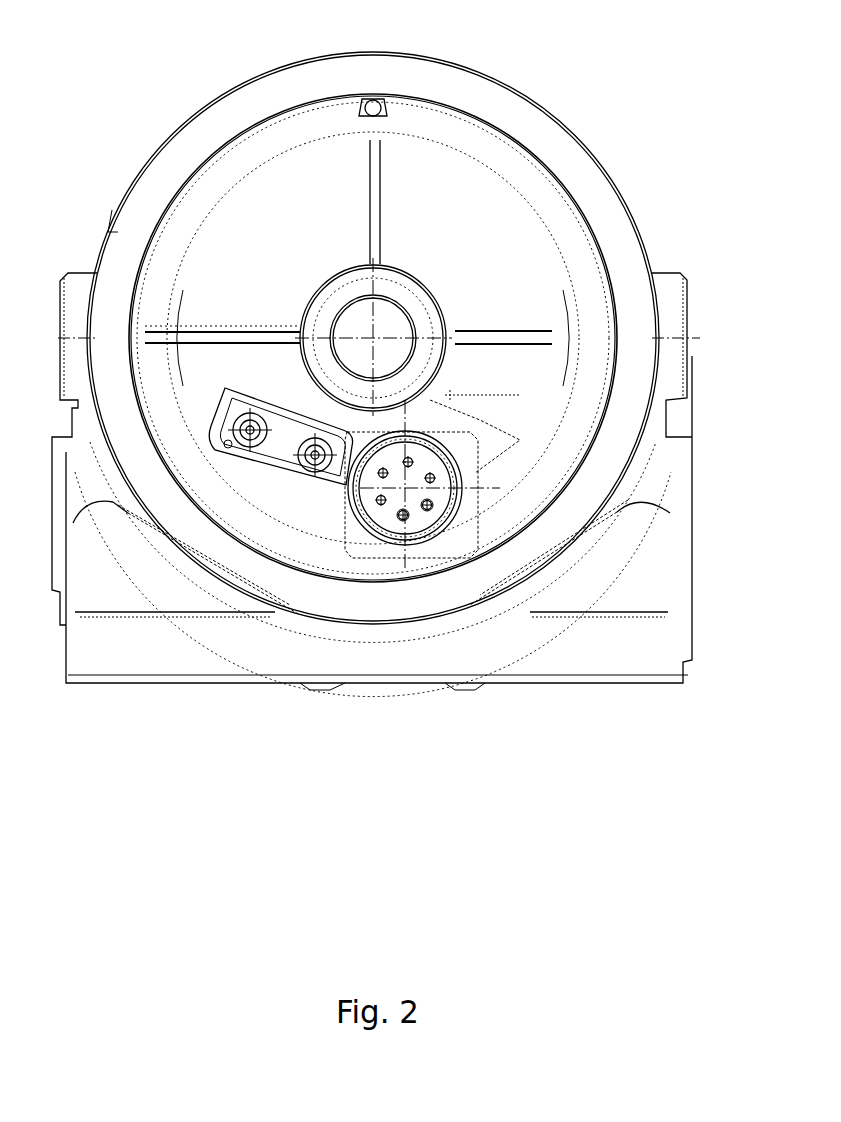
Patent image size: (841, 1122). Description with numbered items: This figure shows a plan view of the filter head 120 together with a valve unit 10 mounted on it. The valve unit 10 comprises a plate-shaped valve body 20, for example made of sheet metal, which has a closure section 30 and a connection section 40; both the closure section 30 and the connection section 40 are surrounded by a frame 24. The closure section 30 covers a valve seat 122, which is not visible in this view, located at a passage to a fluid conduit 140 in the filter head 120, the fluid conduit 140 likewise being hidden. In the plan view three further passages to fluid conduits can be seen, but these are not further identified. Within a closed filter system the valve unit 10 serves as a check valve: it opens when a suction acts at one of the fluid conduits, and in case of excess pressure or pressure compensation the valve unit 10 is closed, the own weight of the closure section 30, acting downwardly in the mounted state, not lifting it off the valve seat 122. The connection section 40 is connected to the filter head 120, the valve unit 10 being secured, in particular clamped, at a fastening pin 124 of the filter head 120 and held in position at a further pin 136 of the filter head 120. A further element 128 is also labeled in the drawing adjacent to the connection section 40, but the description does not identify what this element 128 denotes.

The filter head 120 is at (186, 111).
The valve unit 10 is at (376, 575).
The connection section 40 is at (278, 443).
The pin 136 is at (244, 441).
The fastener 128 is at (230, 440).
The fastening pin 124 is at (312, 466).
The valve body 20 is at (343, 524).
The frame 24 is at (475, 473).
The closure section 30 is at (425, 455).
The valve seat 122 is at (430, 532).
The fluid conduit 140 is at (461, 649).